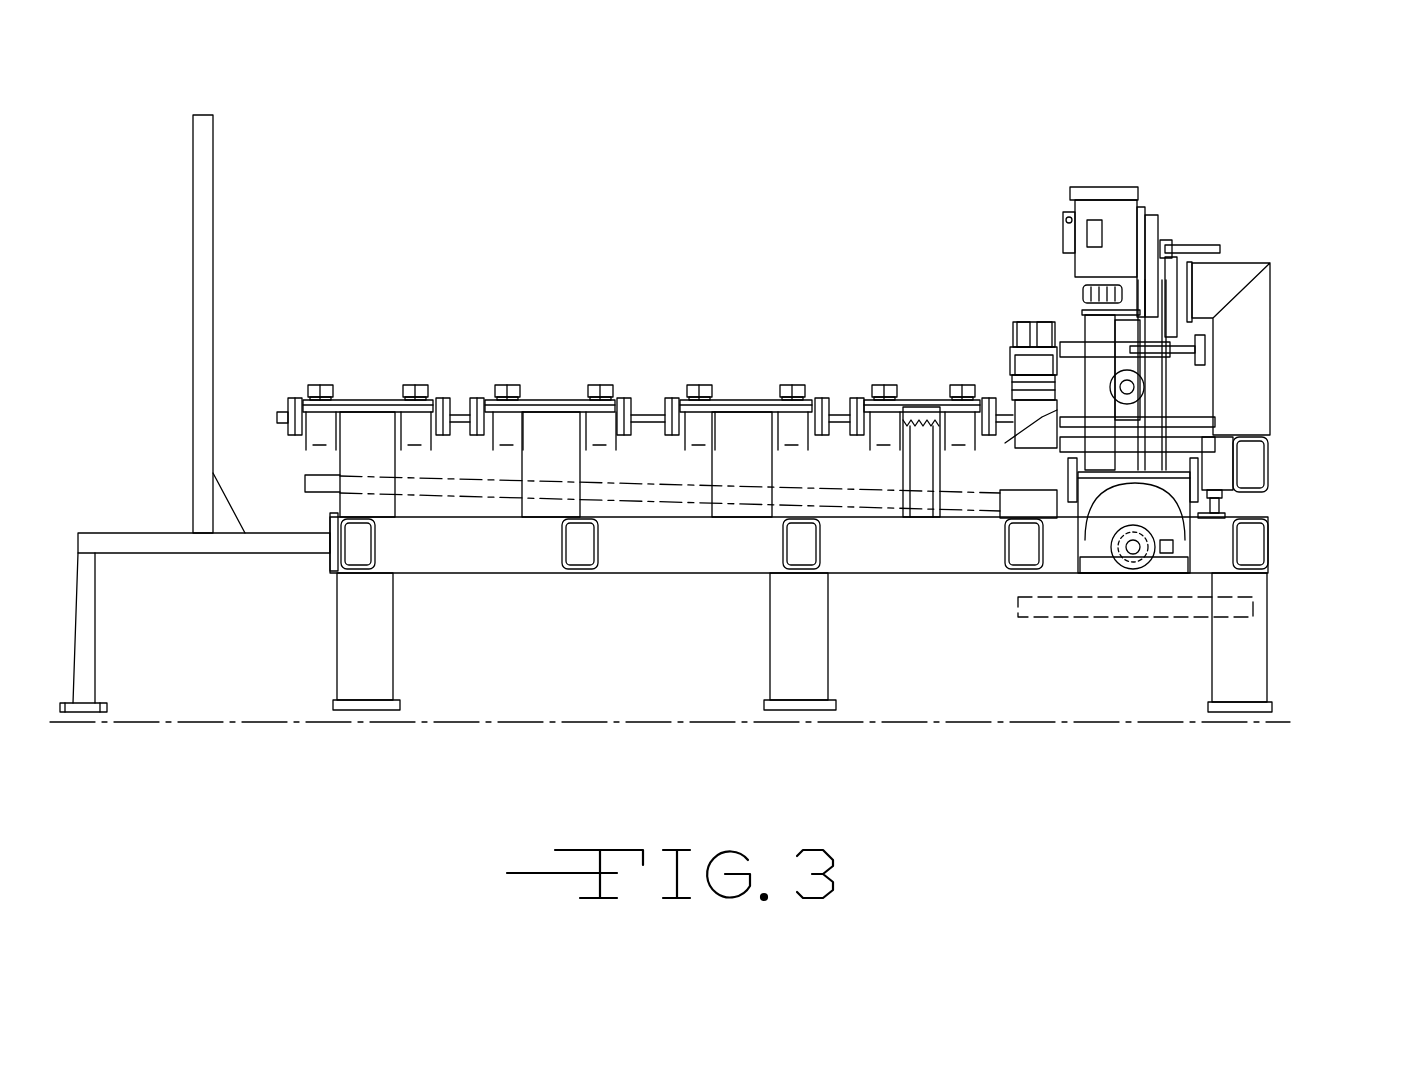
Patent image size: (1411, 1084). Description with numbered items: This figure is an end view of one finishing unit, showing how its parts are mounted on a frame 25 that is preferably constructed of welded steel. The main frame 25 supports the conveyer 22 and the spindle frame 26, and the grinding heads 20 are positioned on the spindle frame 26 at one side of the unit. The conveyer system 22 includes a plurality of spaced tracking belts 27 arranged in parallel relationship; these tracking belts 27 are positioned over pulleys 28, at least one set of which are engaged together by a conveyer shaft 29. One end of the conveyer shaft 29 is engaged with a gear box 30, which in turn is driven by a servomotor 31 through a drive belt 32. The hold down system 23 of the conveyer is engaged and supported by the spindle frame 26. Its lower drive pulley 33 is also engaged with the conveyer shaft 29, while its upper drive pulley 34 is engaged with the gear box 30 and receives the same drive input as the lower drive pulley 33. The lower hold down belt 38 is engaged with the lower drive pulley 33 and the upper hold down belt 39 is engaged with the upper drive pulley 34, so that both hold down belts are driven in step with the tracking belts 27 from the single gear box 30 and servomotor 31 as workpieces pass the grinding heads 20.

The grinding heads 20 is at (1195, 425).
The conveyer 22 is at (360, 295).
The hold down system 23 is at (985, 320).
The frame 25 is at (752, 556).
The spindle frame 26 is at (1222, 472).
The tracking belts 27 is at (322, 385).
The pulleys 28 is at (292, 397).
The conveyer shaft 29 is at (643, 420).
The gear box 30 is at (1175, 388).
The servomotor 31 is at (1117, 567).
The drive belt 32 is at (1222, 503).
The lower drive pulley 33 is at (1003, 395).
The upper drive pulley 34 is at (1045, 420).
The lower hold down belt 38 is at (1047, 440).
The upper hold down belt 39 is at (1035, 323).